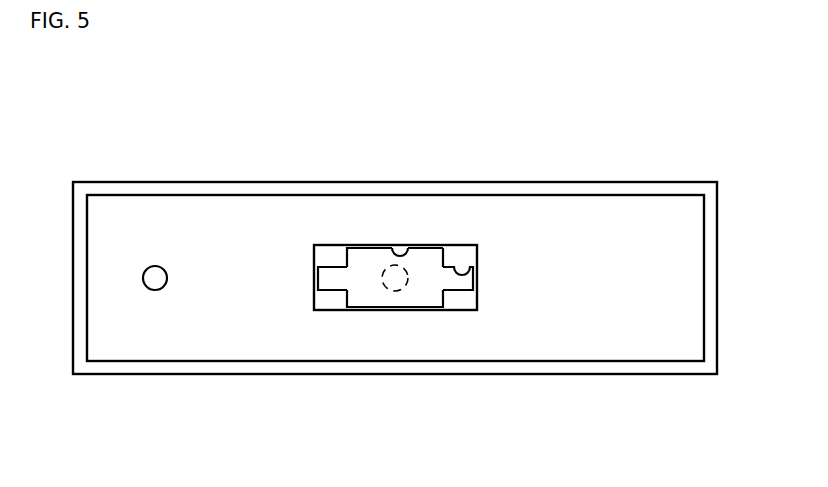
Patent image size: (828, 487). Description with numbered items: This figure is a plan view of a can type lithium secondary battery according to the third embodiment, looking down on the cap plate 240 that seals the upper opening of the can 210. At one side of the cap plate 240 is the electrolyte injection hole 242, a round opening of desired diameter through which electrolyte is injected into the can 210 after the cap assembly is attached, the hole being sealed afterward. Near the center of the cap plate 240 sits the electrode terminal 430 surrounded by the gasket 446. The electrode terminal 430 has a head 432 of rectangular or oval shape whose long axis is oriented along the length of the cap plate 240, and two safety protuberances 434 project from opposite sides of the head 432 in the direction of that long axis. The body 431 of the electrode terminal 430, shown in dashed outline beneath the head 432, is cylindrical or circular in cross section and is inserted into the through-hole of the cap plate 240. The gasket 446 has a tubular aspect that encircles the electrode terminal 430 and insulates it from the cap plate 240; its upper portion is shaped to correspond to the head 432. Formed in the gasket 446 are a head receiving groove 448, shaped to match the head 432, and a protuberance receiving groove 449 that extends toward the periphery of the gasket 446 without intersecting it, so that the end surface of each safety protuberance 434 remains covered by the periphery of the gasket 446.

The can 210 is at (705, 192).
The cap plate 240 is at (633, 215).
The electrolyte injection hole 242 is at (157, 275).
The electrode terminal 430 is at (378, 307).
The body 431 is at (405, 283).
The head 432 is at (365, 263).
The safety protuberance 434 is at (333, 273).
The gasket 446 is at (452, 250).
The head receiving groove 448 is at (406, 248).
The protuberance receiving groove 449 is at (473, 266).